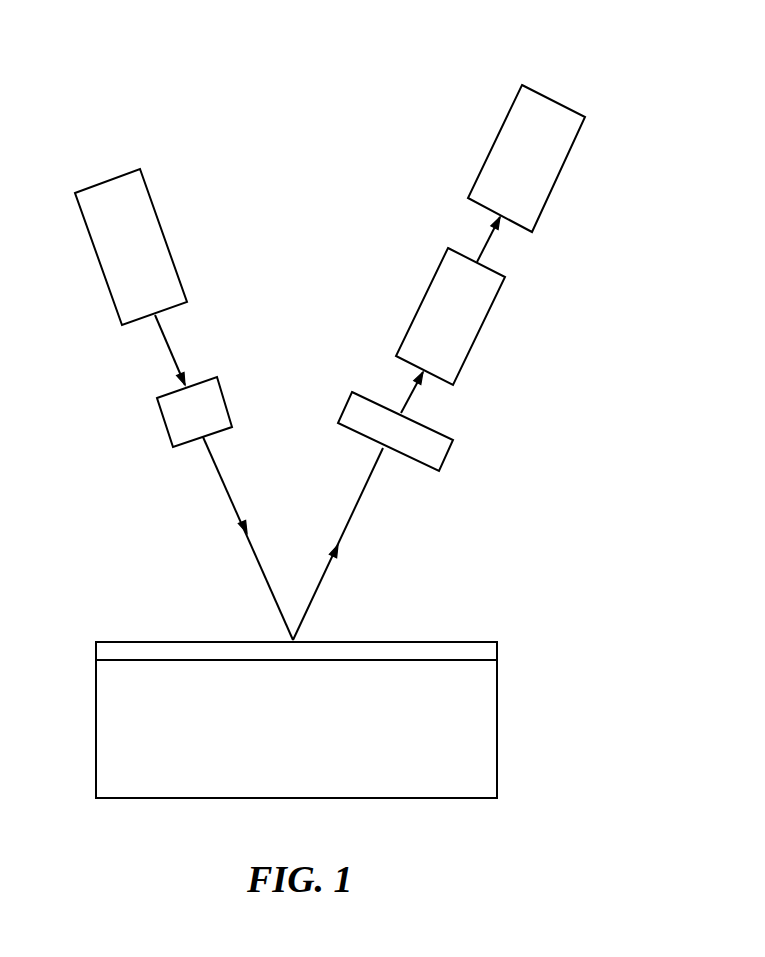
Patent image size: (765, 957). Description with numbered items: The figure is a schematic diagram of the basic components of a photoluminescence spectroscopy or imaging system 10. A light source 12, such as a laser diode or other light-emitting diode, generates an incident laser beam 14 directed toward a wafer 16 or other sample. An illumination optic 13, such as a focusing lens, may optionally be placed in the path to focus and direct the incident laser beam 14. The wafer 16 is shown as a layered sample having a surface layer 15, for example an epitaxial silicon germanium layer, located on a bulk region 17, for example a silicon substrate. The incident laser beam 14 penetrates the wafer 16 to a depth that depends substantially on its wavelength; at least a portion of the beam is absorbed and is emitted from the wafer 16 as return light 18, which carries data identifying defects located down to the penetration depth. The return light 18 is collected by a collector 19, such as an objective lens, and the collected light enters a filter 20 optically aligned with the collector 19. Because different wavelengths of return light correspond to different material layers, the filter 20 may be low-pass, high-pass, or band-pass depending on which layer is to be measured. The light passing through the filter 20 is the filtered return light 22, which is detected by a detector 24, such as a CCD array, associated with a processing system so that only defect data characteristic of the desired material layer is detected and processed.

The photoluminescence imaging system 10 is at (318, 108).
The light source 12 is at (153, 238).
The illumination optic 13 is at (220, 403).
The incident laser beam 14 is at (223, 492).
The surface layer 15 is at (122, 645).
The wafer 16 is at (505, 642).
The bulk region 17 is at (380, 803).
The return light 18 is at (360, 507).
The collector 19 is at (438, 452).
The filter 20 is at (477, 320).
The filtered return light 22 is at (477, 260).
The detector 24 is at (557, 160).